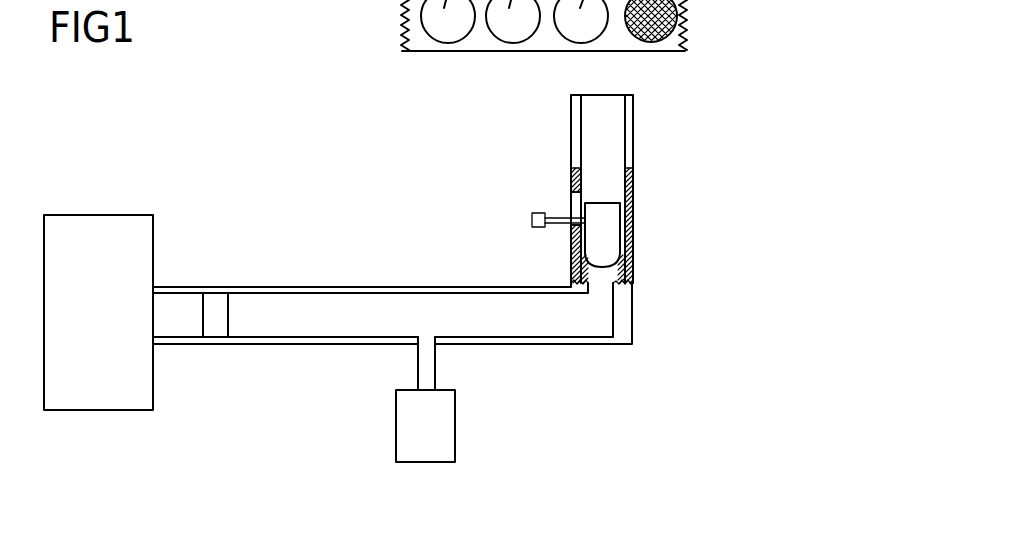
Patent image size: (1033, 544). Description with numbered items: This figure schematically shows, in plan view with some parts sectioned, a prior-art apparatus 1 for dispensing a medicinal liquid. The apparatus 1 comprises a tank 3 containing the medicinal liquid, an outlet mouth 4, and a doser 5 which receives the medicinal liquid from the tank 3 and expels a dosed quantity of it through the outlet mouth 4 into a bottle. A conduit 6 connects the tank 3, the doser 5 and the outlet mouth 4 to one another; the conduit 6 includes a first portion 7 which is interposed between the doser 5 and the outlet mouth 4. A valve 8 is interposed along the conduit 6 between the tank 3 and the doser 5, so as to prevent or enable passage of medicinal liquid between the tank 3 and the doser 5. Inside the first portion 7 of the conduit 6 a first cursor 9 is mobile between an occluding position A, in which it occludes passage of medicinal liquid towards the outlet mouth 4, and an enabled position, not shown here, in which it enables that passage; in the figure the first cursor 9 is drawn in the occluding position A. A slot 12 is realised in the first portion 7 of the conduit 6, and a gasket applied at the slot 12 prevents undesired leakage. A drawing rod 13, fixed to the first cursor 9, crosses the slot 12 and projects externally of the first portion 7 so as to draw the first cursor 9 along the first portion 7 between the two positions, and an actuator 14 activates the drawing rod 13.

The apparatus 1 is at (571, 405).
The tank 3 is at (82, 330).
The outlet mouth 4 is at (651, 102).
The doser 5 is at (436, 442).
The conduit 6 is at (317, 274).
The first portion of conduit 7 is at (649, 189).
The valve 8 is at (223, 328).
The first cursor 9 is at (607, 228).
The slot 12 is at (577, 208).
The drawing rod 13 is at (555, 226).
The actuator 14 is at (532, 228).
The occluding position A is at (643, 273).